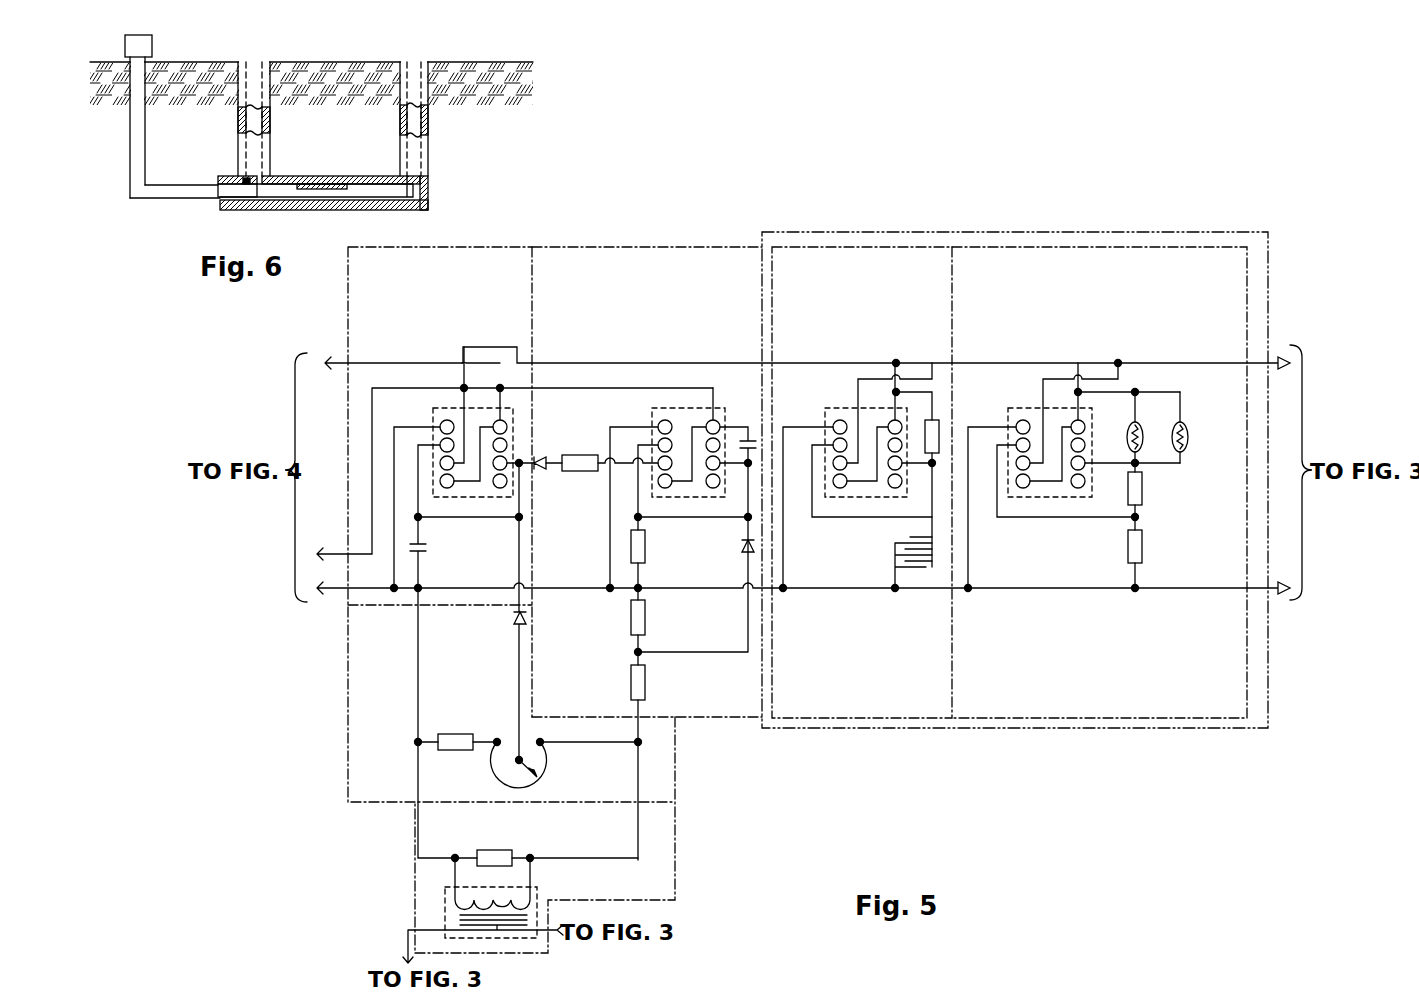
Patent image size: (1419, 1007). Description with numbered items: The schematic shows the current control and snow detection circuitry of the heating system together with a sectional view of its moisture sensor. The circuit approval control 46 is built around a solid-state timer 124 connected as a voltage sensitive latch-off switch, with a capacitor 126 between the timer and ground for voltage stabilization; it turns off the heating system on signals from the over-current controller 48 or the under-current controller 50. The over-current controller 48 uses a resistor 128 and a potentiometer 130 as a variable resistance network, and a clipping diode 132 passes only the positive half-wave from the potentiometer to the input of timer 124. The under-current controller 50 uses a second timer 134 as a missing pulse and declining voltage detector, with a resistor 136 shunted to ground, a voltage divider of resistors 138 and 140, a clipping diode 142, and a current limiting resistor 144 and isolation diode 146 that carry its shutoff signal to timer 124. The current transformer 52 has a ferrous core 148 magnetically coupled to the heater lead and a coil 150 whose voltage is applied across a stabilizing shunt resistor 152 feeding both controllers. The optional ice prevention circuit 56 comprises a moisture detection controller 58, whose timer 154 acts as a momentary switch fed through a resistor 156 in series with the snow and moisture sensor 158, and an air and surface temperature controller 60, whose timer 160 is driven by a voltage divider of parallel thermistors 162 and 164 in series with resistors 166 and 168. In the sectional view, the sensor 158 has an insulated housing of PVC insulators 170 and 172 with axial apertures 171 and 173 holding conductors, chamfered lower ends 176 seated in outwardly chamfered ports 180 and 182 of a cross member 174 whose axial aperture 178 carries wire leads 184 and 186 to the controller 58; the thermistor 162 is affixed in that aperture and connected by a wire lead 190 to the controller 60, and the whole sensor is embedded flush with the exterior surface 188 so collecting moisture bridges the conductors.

In FIG. 5, the circuit approval control 46 is at (440, 247).
In FIG. 5, the over-current controller 48 is at (348, 700).
In FIG. 5, the under-current controller 50 is at (652, 247).
In FIG. 5, the current transformer 52 is at (553, 955).
In FIG. 6, the ice prevention circuit 56 is at (152, 40).
In FIG. 5, the ice prevention circuit 56 is at (940, 232).
In FIG. 5, the moisture detection controller 58 is at (845, 718).
In FIG. 5, the air and surface temperature controller 60 is at (1080, 718).
In FIG. 5, the solid-state timer 124 is at (477, 498).
In FIG. 5, the capacitor 126 is at (426, 548).
In FIG. 5, the resistor 128 is at (452, 751).
In FIG. 5, the potentiometer 130 is at (548, 762).
In FIG. 5, the clipping diode 132 is at (513, 620).
In FIG. 5, the solid-state timer 134 is at (700, 497).
In FIG. 5, the resistor 136 is at (645, 547).
In FIG. 5, the resistor 138 is at (645, 618).
In FIG. 5, the resistor 140 is at (645, 685).
In FIG. 5, the clipping diode 142 is at (745, 554).
In FIG. 5, the current limiting resistor 144 is at (580, 471).
In FIG. 5, the isolation diode 146 is at (540, 470).
In FIG. 5, the core 148 is at (497, 938).
In FIG. 5, the coil 150 is at (520, 905).
In FIG. 5, the resistor 152 is at (495, 850).
In FIG. 5, the solid-state timer 154 is at (840, 497).
In FIG. 5, the resistor 156 is at (940, 434).
In FIG. 6, the snow and moisture sensor 158 is at (445, 158).
In FIG. 5, the snow and moisture sensor 158 is at (895, 558).
In FIG. 5, the solid-state timer 160 is at (1062, 497).
In FIG. 6, the thermistor 162 is at (325, 192).
In FIG. 5, the thermistor 162 is at (1128, 430).
In FIG. 5, the thermistor 164 is at (1184, 426).
In FIG. 5, the resistor 166 is at (1145, 490).
In FIG. 5, the resistor 168 is at (1145, 546).
In FIG. 6, the insulator 170 is at (272, 121).
In FIG. 6, the aperture 171 is at (260, 150).
In FIG. 6, the insulator 172 is at (430, 121).
In FIG. 6, the aperture 173 is at (414, 148).
In FIG. 6, the cross member 174 is at (400, 210).
In FIG. 6, the lower ends 176 is at (243, 176).
In FIG. 6, the aperture 178 is at (353, 203).
In FIG. 6, the port 180 is at (265, 198).
In FIG. 6, the port 182 is at (430, 195).
In FIG. 6, the wire lead 184 is at (146, 140).
In FIG. 6, the wire lead 186 is at (130, 175).
In FIG. 6, the exterior surface 188 is at (462, 62).
In FIG. 6, the wire lead 190 is at (130, 130).